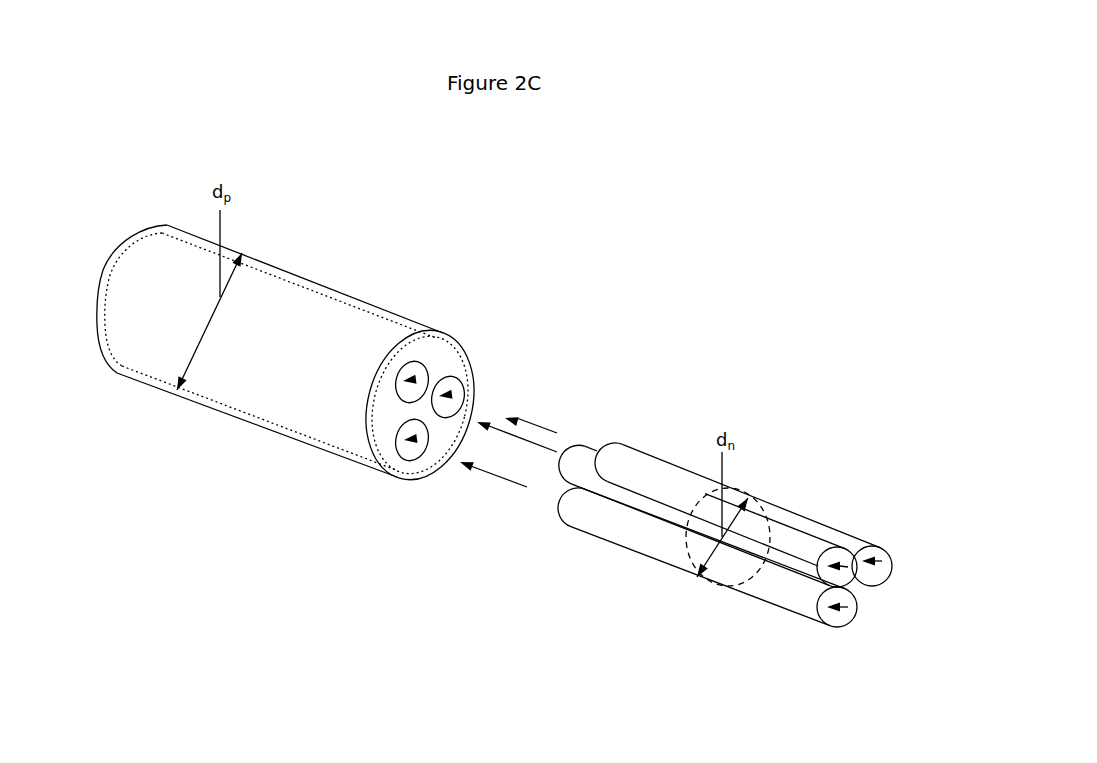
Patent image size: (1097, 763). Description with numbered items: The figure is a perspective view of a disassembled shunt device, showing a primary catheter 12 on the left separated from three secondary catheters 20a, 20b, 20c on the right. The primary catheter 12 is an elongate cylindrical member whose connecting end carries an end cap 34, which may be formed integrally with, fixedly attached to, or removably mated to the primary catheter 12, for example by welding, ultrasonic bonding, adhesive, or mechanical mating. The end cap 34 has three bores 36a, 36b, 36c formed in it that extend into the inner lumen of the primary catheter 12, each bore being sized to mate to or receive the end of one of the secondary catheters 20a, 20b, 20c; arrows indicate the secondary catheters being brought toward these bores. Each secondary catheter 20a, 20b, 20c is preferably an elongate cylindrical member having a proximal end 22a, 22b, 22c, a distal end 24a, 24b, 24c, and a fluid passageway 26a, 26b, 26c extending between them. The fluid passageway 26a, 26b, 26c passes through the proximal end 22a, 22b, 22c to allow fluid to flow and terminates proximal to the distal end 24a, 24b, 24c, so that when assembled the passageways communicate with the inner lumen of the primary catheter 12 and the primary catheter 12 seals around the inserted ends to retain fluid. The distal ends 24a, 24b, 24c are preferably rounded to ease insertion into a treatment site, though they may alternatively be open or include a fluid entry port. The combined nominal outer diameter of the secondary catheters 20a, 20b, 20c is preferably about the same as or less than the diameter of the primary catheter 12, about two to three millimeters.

The primary catheter 12 is at (395, 250).
The end cap 34 is at (390, 430).
The bore 36a is at (417, 438).
The bore 36b is at (452, 394).
The bore 36c is at (416, 379).
The secondary catheter 20a is at (745, 595).
The secondary catheter 20b is at (806, 510).
The secondary catheter 20c is at (780, 537).
The proximal end 22a is at (568, 512).
The proximal end 22b is at (655, 462).
The proximal end 22c is at (585, 465).
The distal end 24a is at (806, 605).
The distal end 24b is at (858, 540).
The distal end 24c is at (818, 548).
The fluid passageway 26a is at (848, 607).
The fluid passageway 26b is at (882, 561).
The fluid passageway 26c is at (848, 567).